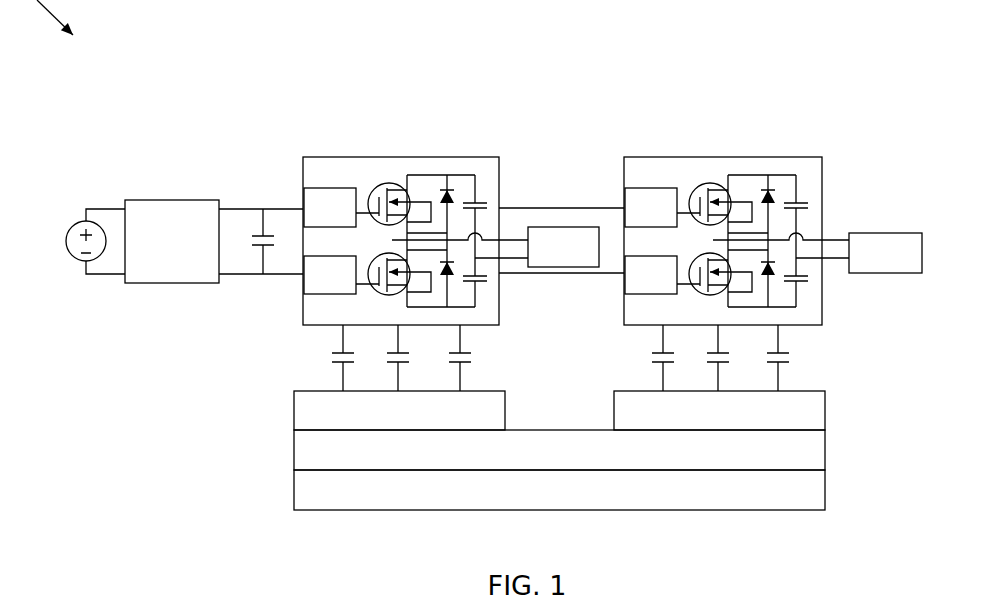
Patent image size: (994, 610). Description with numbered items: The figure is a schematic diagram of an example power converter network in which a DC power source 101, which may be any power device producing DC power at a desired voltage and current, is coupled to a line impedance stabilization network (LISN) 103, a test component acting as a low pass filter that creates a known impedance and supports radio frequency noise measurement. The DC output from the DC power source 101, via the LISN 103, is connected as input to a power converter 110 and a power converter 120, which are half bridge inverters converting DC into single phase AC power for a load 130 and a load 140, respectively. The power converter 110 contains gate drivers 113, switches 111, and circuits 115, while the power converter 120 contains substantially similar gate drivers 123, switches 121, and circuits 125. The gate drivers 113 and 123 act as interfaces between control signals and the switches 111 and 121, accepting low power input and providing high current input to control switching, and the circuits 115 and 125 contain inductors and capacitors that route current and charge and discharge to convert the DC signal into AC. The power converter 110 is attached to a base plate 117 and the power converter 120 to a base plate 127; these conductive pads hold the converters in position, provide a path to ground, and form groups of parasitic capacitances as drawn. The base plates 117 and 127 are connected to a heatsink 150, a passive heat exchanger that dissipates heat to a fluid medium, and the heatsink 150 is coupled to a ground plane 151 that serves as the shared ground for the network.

The DC power source 101 is at (72, 258).
The line impedance stabilization network (LISN) 103 is at (173, 198).
The power converter 110 is at (472, 157).
The switches 111 is at (397, 183).
The gate drivers 113 is at (332, 296).
The circuits 115 is at (482, 167).
The base plate 117 is at (293, 412).
The power converter 120 is at (792, 155).
The switches 121 is at (713, 180).
The gate drivers 123 is at (652, 295).
The circuits 125 is at (797, 168).
The base plate 127 is at (825, 408).
The load 130 is at (565, 223).
The load 140 is at (888, 233).
The heatsink 150 is at (825, 448).
The ground plane 151 is at (825, 487).